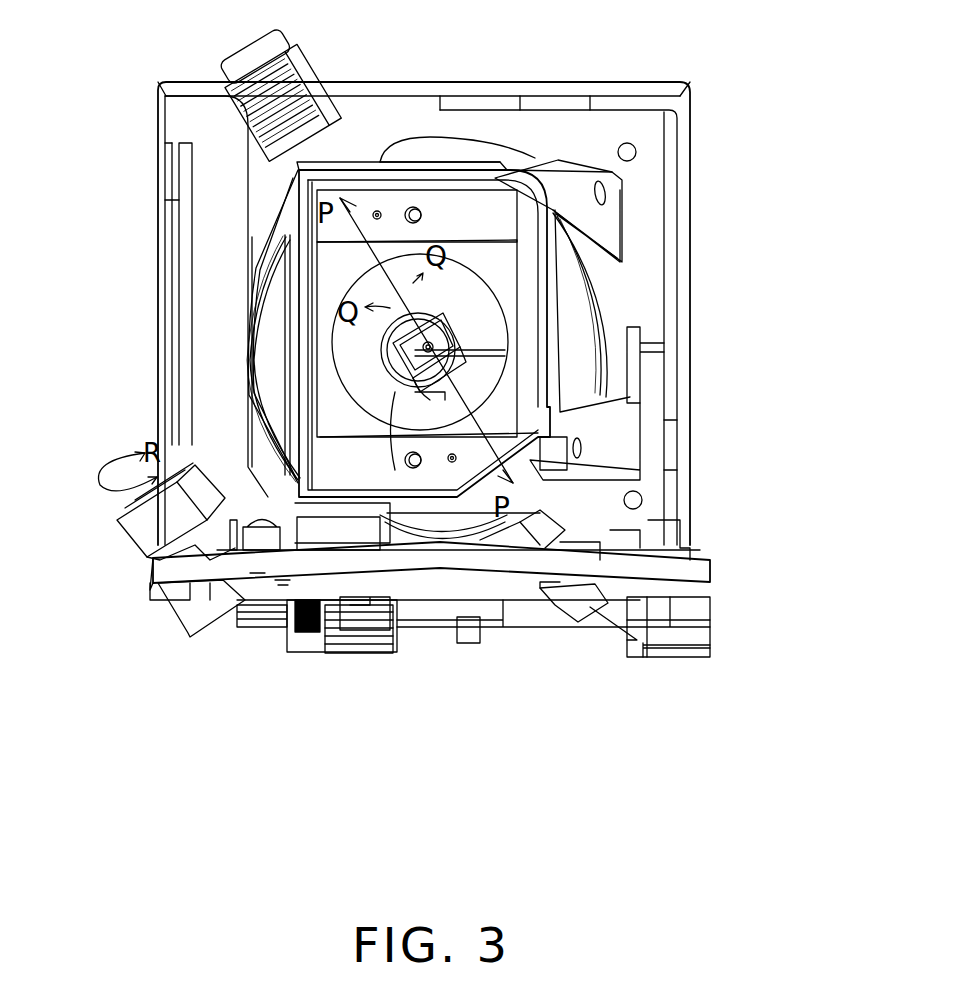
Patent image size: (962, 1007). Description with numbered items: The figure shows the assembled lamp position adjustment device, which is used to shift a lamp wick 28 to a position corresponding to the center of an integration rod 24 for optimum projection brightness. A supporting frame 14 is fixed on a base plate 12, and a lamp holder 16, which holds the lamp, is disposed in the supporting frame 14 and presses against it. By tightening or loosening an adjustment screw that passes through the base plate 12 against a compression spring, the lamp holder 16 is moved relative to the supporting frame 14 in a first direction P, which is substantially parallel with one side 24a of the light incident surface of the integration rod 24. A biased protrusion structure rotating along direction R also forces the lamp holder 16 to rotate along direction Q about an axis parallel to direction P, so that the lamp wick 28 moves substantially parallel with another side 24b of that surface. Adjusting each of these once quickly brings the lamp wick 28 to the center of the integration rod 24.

The base plate 12 is at (519, 630).
The supporting frame 14 is at (699, 108).
The lamp holder 16 is at (300, 267).
The integration rod 24 is at (407, 380).
The one side of a light incident surface of the integration rod 24a is at (437, 313).
The another side of the light incident surface of the integration rod 24b is at (433, 370).
The lamp wick 28 is at (383, 348).